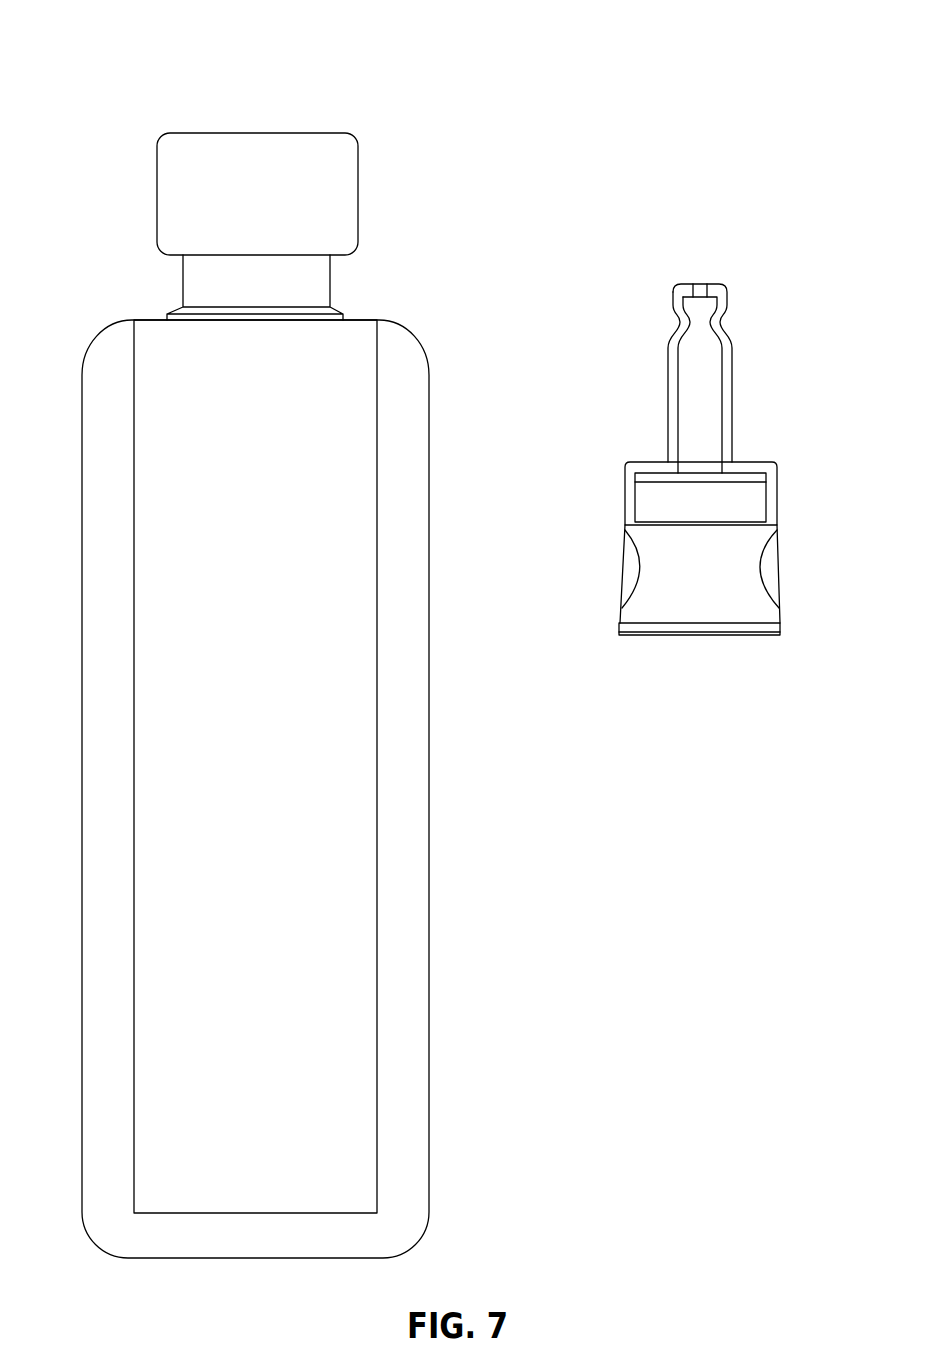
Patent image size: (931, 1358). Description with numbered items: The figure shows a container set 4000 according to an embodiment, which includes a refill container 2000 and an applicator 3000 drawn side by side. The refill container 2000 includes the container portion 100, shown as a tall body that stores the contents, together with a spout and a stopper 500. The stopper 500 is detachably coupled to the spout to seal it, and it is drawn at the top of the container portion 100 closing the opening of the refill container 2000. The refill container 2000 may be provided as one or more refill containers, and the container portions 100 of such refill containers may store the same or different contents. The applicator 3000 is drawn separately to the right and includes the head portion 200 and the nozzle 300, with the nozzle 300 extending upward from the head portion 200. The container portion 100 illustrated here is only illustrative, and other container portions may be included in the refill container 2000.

The container portion 100 is at (429, 838).
The head portion 200 is at (682, 642).
The nozzle 300 is at (668, 402).
The stopper 500 is at (360, 205).
The refill container 2000 is at (345, 98).
The applicator 3000 is at (702, 258).
The container set 4000 is at (740, 22).